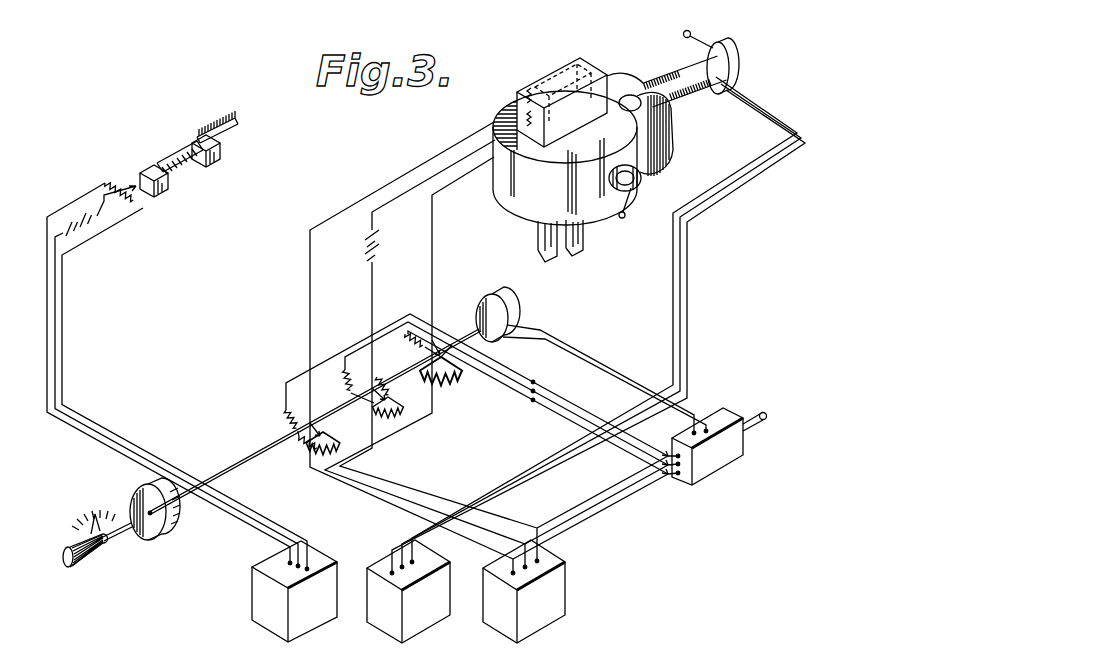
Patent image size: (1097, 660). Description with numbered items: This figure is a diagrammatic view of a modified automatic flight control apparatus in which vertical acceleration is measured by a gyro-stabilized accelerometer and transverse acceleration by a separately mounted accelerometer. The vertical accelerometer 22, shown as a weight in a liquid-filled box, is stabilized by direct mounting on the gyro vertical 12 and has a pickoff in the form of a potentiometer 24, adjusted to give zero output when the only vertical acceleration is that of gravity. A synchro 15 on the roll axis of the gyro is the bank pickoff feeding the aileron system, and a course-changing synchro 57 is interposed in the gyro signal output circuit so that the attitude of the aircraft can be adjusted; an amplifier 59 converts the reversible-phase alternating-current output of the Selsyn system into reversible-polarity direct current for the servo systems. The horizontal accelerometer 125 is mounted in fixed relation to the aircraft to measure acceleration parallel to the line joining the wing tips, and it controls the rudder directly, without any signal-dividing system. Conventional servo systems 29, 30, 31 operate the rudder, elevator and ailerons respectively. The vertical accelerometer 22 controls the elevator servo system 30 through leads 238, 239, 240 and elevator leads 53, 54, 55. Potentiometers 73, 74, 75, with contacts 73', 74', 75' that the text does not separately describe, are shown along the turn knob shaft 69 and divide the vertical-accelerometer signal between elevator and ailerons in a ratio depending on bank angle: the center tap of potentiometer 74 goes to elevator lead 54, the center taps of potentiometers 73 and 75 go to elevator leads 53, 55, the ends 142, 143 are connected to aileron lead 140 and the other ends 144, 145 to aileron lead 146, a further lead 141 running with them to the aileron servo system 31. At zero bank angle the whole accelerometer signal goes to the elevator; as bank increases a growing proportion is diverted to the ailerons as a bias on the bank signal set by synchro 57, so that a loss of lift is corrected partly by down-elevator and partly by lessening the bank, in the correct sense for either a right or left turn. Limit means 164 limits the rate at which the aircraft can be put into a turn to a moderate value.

The gyro vertical 12 is at (527, 205).
The synchro 15 is at (733, 63).
The vertical accelerometer 22 is at (566, 94).
The potentiometer 24 is at (503, 101).
The rudder servo system 29 is at (277, 623).
The elevator servo system 30 is at (385, 622).
The aileron servo system 31 is at (500, 620).
The elevator lead 53 is at (503, 479).
The elevator lead 54 is at (462, 506).
The elevator lead 55 is at (505, 499).
The course-changing synchro 57 is at (521, 320).
The amplifier 59 is at (728, 410).
The turn knob shaft 69 is at (223, 470).
The potentiometer 73 is at (278, 436).
The brush contact 73' is at (300, 460).
The potentiometer 74 is at (386, 370).
The brush contact 74' is at (368, 414).
The potentiometer 75 is at (452, 333).
The brush contact 75' is at (428, 376).
The horizontal accelerometer 125 is at (160, 166).
The aileron lead 140 is at (615, 490).
The lead 141 is at (592, 512).
The potentiometer end 142 is at (284, 406).
The potentiometer end 143 is at (490, 359).
The potentiometer end 144 is at (345, 378).
The potentiometer end 145 is at (409, 330).
The aileron lead 146 is at (575, 530).
The limit means 164 is at (163, 533).
The lead 238 is at (309, 307).
The lead 239 is at (371, 292).
The lead 240 is at (432, 273).